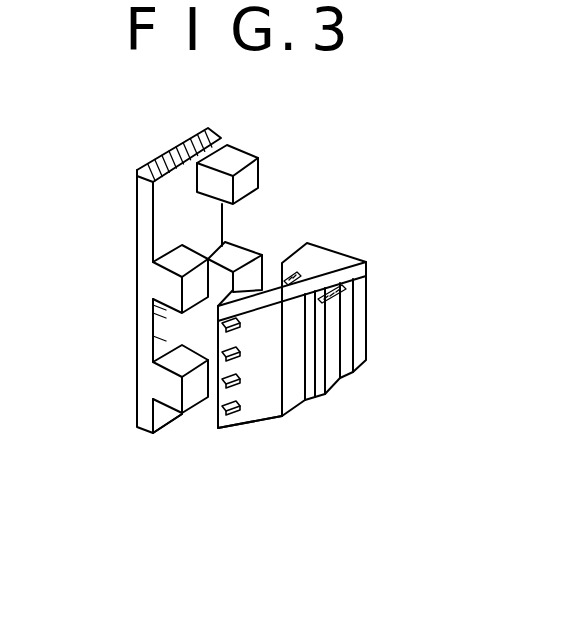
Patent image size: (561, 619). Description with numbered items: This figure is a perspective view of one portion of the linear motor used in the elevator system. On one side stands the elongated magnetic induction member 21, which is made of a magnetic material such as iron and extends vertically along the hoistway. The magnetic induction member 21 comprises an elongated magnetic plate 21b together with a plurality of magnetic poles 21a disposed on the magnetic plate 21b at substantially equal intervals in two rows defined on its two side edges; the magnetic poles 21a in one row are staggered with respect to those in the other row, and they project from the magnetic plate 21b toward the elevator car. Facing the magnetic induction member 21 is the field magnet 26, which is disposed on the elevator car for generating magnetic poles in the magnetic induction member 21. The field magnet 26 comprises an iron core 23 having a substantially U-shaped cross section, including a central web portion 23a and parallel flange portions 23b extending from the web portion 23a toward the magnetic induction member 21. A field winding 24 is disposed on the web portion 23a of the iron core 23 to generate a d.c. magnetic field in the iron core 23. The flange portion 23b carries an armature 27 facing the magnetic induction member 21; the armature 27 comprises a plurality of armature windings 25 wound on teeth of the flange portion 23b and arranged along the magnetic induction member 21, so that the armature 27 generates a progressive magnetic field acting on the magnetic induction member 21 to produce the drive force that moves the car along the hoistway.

The magnetic induction member 21 is at (135, 230).
The magnetic poles 21a is at (266, 163).
The magnetic plate 21b is at (160, 360).
The iron core 23 is at (347, 258).
The web portion 23a is at (316, 287).
The flange portions 23b is at (252, 424).
The field winding 24 is at (347, 372).
The armature windings 25 is at (225, 385).
The field magnet 26 is at (340, 332).
The armature 27 is at (226, 383).